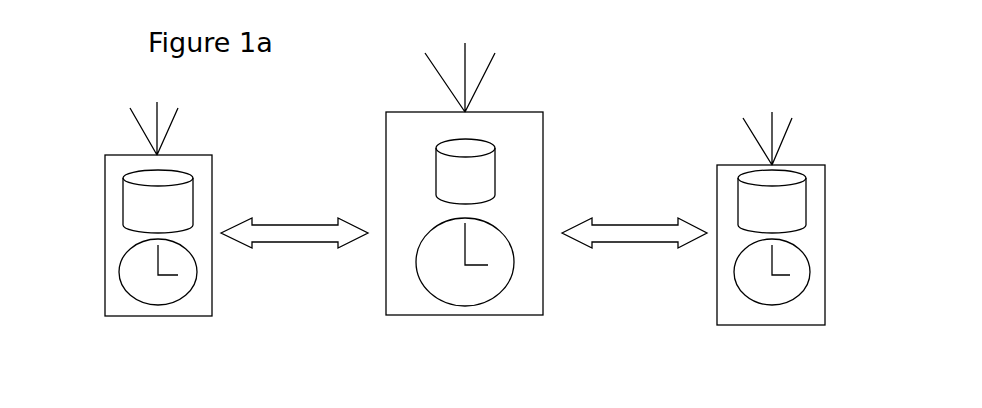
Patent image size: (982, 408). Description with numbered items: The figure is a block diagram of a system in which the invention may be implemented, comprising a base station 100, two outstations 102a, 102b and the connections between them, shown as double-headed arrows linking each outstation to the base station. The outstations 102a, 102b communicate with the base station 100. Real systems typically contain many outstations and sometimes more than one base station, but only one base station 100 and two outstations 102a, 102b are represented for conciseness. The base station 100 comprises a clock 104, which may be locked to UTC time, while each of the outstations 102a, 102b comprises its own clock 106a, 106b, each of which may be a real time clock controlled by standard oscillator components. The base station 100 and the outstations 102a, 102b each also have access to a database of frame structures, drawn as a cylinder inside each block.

The base station 100 is at (523, 112).
The outstation 102a is at (213, 168).
The outstation 102b is at (717, 170).
The clock 104 is at (445, 287).
The clock 106a is at (162, 295).
The clock 106b is at (767, 295).